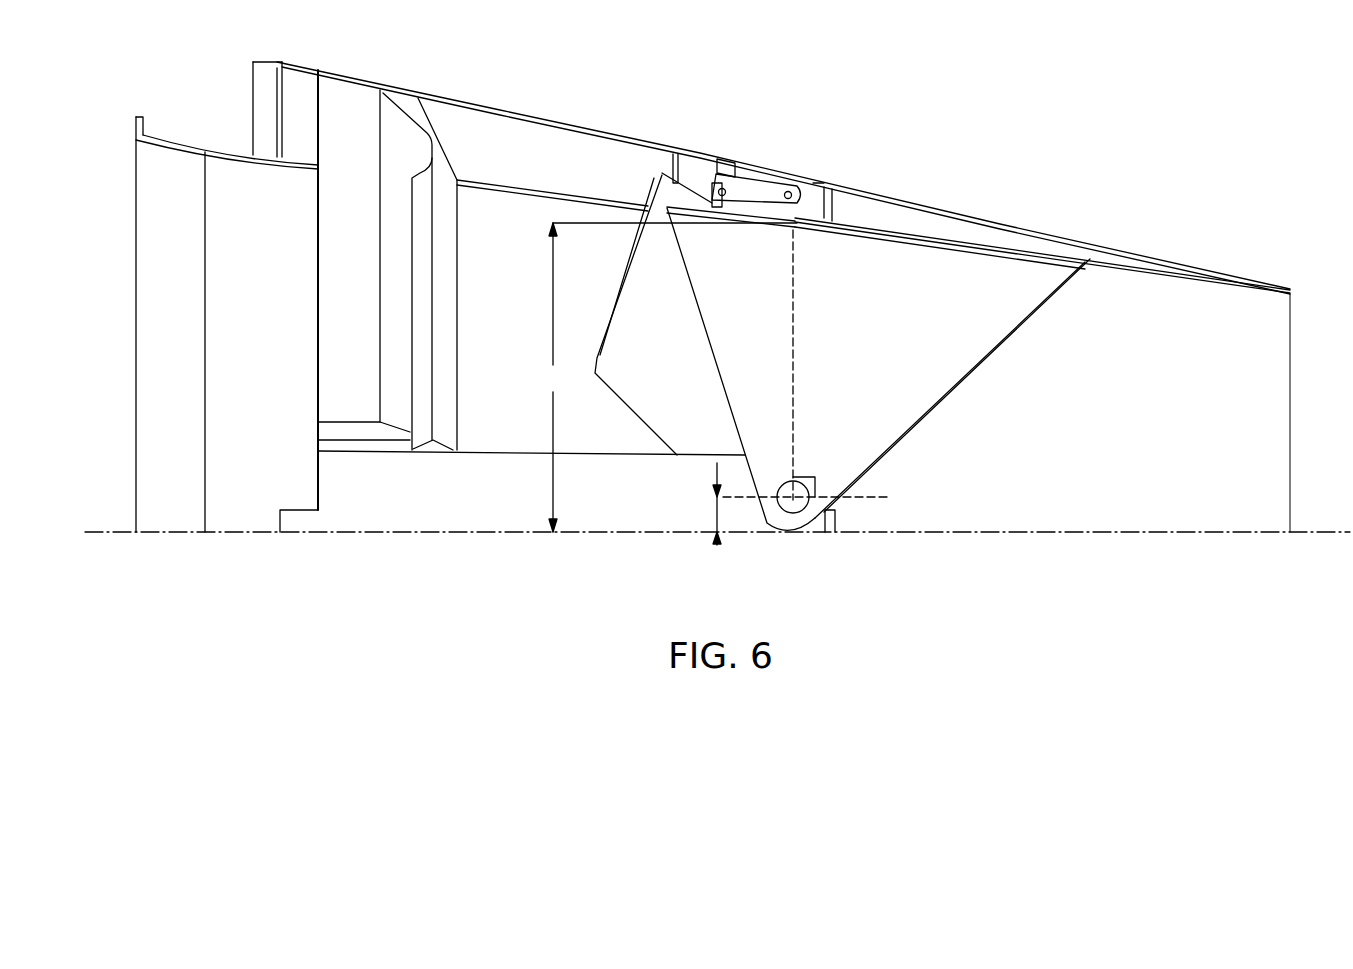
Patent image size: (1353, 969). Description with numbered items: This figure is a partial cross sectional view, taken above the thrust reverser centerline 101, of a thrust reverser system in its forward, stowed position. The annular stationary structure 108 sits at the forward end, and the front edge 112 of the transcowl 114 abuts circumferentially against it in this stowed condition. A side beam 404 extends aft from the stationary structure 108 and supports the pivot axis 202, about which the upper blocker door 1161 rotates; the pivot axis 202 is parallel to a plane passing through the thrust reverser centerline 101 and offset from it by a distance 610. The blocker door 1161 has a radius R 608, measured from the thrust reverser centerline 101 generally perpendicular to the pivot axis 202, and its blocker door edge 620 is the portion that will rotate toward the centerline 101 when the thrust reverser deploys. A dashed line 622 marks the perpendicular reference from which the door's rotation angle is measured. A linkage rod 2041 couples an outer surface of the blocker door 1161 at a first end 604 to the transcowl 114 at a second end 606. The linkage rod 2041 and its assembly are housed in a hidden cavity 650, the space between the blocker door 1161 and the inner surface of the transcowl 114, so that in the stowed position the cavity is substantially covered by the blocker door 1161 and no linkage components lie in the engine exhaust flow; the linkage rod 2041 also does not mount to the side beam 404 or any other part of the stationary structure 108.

The thrust reverser centerline 101 is at (1305, 530).
The stationary structure 108 is at (170, 142).
The front edge 112 is at (290, 72).
The transcowl 114 is at (510, 104).
The pivot axis 202 is at (790, 515).
The side beam 404 is at (403, 513).
The first end 604 is at (729, 171).
The second end 606 is at (825, 185).
The radius R 608 is at (662, 377).
The distance 610 is at (715, 514).
The blocker door edge 620 is at (1022, 322).
The dashed line 622 is at (795, 350).
The hidden cavity 650 is at (690, 180).
The upper blocker door 1161 is at (935, 305).
The linkage rod 2041 is at (755, 192).